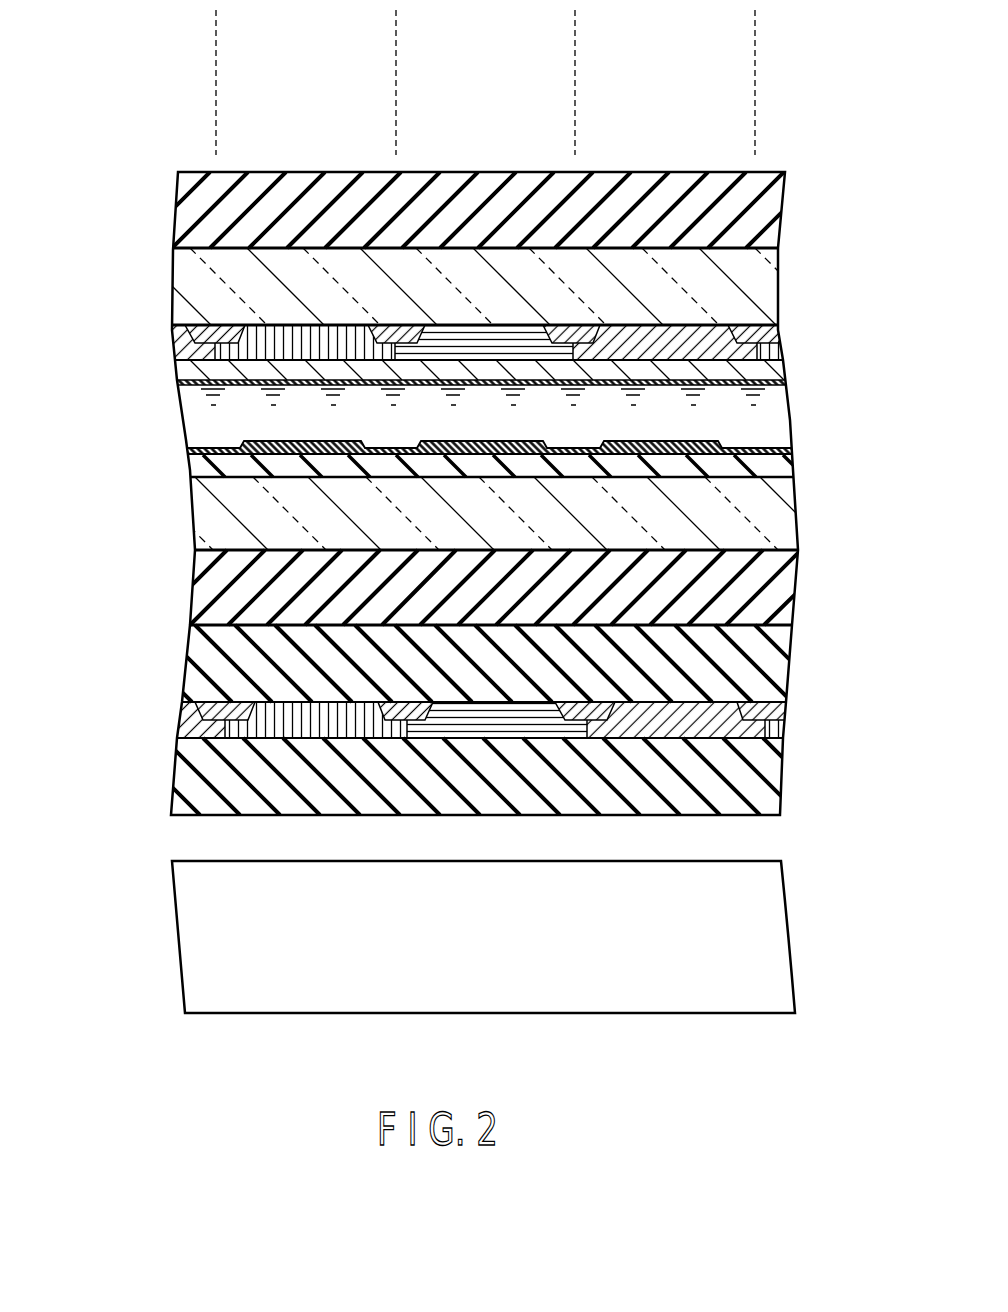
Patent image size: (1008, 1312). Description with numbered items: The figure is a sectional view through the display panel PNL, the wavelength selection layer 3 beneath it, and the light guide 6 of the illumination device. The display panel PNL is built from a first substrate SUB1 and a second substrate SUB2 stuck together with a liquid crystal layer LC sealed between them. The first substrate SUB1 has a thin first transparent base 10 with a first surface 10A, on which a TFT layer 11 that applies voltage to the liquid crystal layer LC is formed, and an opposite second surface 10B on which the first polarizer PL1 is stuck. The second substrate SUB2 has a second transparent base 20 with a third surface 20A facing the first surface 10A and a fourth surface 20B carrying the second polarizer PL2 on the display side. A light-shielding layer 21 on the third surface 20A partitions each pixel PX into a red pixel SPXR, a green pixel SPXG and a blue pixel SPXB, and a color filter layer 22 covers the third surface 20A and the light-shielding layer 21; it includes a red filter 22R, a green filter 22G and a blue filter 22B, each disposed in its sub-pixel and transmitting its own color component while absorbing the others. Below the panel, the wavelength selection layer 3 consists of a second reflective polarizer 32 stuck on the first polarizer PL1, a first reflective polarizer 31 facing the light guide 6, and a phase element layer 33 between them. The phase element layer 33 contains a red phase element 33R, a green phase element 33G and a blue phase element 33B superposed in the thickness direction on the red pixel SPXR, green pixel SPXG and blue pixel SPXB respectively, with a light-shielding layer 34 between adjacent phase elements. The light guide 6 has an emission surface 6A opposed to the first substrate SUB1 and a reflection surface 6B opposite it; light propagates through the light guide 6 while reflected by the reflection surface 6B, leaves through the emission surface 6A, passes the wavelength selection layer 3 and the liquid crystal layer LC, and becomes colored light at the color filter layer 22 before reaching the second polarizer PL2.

The second polarizer PL2 is at (205, 226).
The second substrate SUB2 is at (176, 385).
The second transparent base 20 is at (185, 290).
The light-shielding layer 21 is at (190, 331).
The color filter layer 22 is at (166, 358).
The red filter 22R is at (341, 333).
The green filter 22G is at (509, 333).
The blue filter 22B is at (672, 333).
The fourth surface 20B is at (254, 248).
The third surface 20A is at (449, 326).
The liquid crystal layer LC is at (207, 418).
The first substrate SUB1 is at (195, 550).
The TFT layer 11 is at (210, 465).
The first transparent base 10 is at (205, 518).
The first surface 10A is at (577, 470).
The second surface 10B is at (646, 551).
The first polarizer PL1 is at (207, 593).
The display panel PNL is at (803, 172).
The wavelength selection layer 3 is at (803, 624).
The second reflective polarizer 32 is at (193, 662).
The phase element layer 33 is at (174, 729).
The light-shielding layer 34 is at (200, 707).
The red phase element 33R is at (313, 732).
The green phase element 33G is at (502, 726).
The blue phase element 33B is at (683, 732).
The first reflective polarizer 31 is at (188, 768).
The light guide 6 is at (800, 934).
The emission surface 6A is at (622, 861).
The reflection surface 6B is at (638, 1013).
The pixel PX is at (743, 35).
The red pixel SPXR is at (228, 82).
The green pixel SPXG is at (408, 82).
The blue pixel SPXB is at (587, 82).